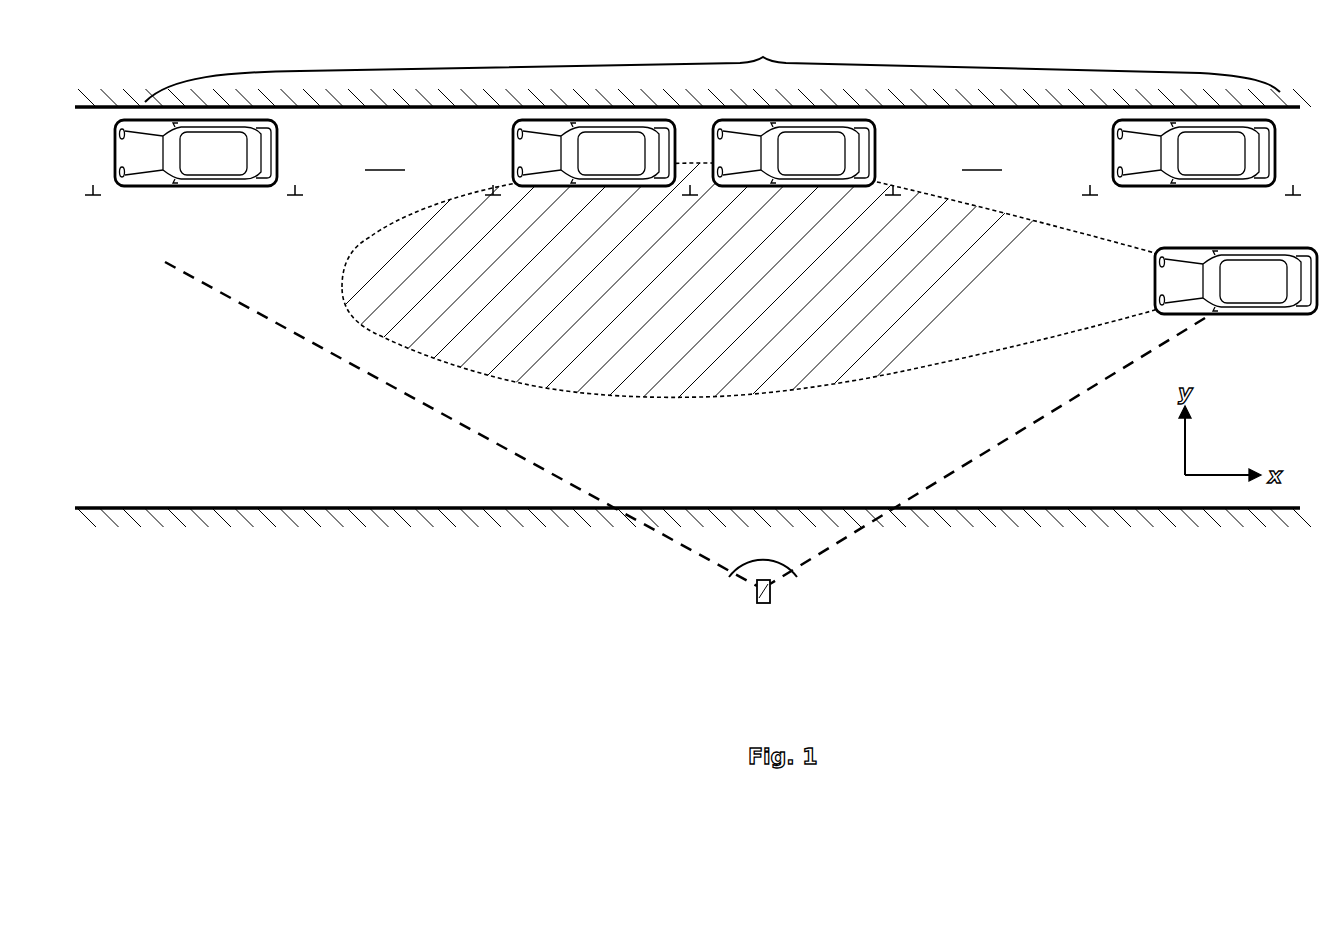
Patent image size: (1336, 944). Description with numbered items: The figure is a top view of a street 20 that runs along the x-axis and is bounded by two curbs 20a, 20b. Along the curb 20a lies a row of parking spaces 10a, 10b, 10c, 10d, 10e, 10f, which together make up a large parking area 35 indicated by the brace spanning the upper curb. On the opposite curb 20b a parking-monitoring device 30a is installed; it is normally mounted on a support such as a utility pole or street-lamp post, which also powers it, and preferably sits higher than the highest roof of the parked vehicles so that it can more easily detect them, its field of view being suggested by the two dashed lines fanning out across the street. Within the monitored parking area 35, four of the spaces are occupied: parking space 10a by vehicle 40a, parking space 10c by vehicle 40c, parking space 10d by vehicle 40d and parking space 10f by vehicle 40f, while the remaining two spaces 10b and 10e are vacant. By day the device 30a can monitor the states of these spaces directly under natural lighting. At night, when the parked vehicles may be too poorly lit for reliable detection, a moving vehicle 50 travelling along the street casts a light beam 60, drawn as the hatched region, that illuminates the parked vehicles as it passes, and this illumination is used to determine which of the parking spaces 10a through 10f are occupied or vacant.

The parking space 10a is at (1200, 192).
The parking space 10b is at (982, 158).
The parking space 10c is at (805, 192).
The parking space 10d is at (605, 192).
The parking space 10e is at (384, 158).
The parking space 10f is at (212, 192).
The street 20 is at (146, 321).
The curb 20a is at (91, 105).
The curb 20b is at (89, 504).
The parking-monitoring device 30a is at (770, 604).
The parking area 35 is at (712, 66).
The vehicle 40a is at (1194, 153).
The vehicle 40c is at (794, 153).
The vehicle 40d is at (594, 153).
The vehicle 40f is at (196, 153).
The moving vehicle 50 is at (1236, 281).
The light beam 60 is at (716, 398).